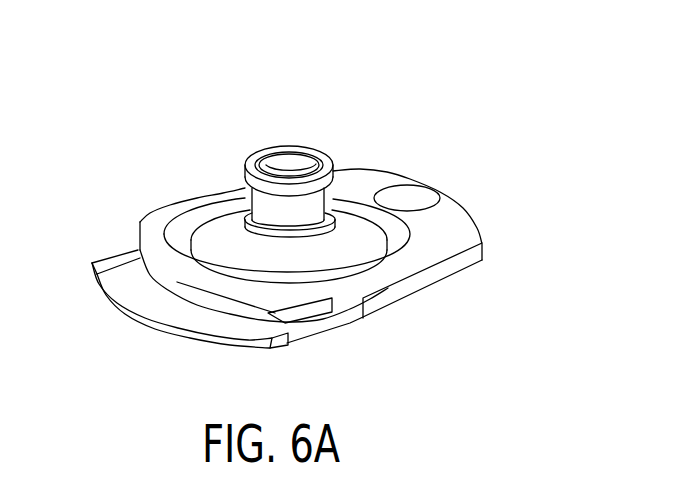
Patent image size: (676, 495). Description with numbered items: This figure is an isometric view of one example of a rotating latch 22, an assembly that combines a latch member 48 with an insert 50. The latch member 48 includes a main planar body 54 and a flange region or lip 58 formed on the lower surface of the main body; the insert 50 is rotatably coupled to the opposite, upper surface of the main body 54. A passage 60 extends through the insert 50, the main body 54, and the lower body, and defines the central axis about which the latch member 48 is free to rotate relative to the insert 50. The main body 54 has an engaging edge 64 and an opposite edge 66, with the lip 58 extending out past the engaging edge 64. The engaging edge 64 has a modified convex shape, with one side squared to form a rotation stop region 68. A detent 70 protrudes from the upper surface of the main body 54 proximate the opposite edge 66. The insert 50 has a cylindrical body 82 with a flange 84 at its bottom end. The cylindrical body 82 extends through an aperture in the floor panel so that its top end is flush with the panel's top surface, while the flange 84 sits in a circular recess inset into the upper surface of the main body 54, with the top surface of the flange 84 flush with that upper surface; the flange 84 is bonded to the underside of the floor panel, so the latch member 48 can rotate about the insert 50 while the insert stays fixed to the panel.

The rotating latch 22 is at (162, 160).
The latch member 48 is at (475, 277).
The insert 50 is at (282, 137).
The main planar body 54 is at (465, 222).
The flange region or lip 58 is at (188, 312).
The passage 60 is at (300, 167).
The engaging edge 64 is at (130, 235).
The opposite edge 66 is at (487, 193).
The rotation stop region 68 is at (265, 297).
The detent 70 is at (420, 193).
The cylindrical body 82 is at (257, 212).
The flange 84 is at (348, 255).